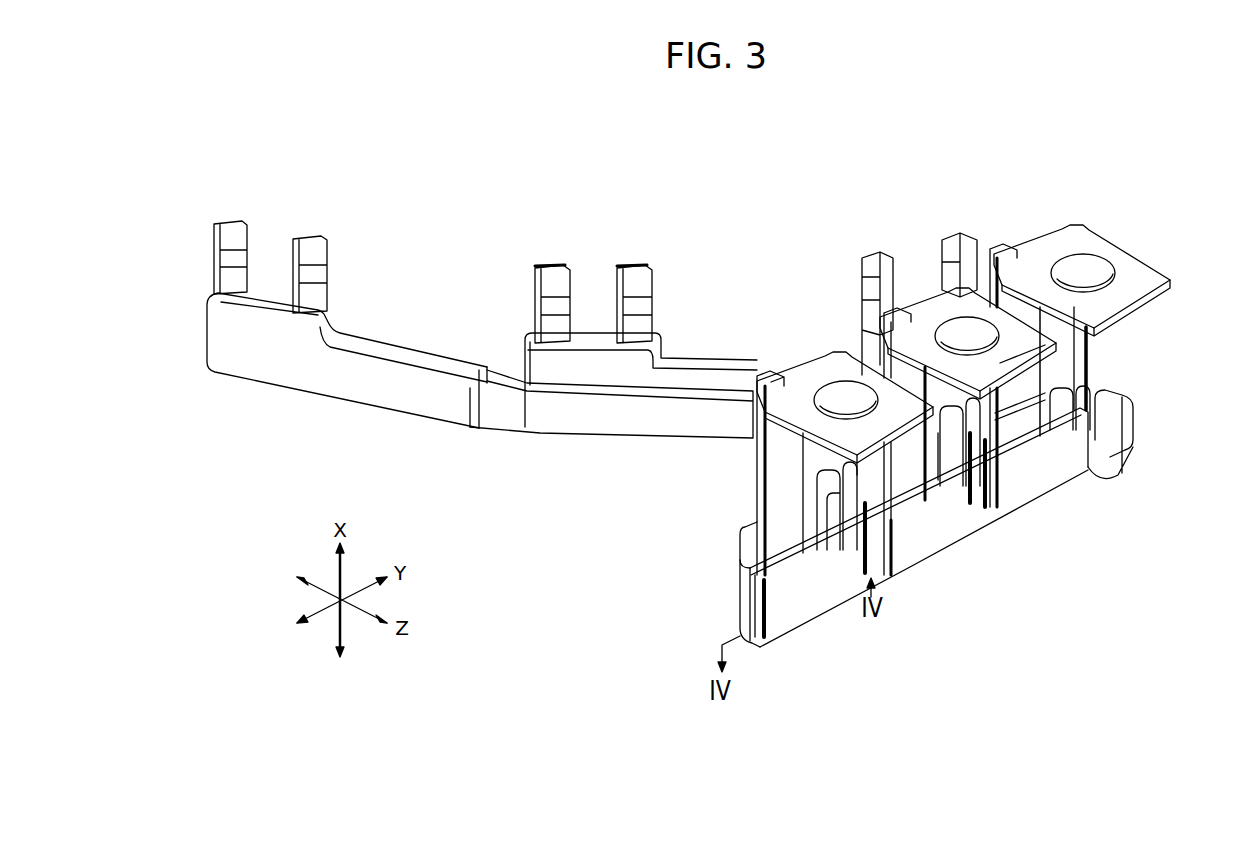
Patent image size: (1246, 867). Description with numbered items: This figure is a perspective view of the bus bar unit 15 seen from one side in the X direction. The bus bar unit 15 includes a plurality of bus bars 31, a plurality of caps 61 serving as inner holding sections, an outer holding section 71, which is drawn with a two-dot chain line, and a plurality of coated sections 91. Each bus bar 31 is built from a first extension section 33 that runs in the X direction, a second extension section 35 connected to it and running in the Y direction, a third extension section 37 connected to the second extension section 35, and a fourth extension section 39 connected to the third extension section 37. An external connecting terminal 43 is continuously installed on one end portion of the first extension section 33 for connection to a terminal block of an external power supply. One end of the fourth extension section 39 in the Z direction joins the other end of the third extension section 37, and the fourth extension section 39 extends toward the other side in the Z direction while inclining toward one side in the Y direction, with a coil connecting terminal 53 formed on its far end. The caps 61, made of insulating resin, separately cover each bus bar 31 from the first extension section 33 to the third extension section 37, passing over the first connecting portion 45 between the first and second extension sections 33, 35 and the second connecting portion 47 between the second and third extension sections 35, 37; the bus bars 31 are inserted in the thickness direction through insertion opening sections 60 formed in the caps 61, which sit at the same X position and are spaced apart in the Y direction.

The bus bar unit 15 is at (1062, 200).
The bus bar 31 is at (1155, 194).
The first extension section 33 is at (750, 432).
The second extension section 35 is at (838, 745).
The third extension section 37 is at (1153, 381).
The fourth extension section 39 is at (552, 485).
The external connecting terminal 43 is at (1208, 226).
The first connecting portion 45 is at (1060, 455).
The second connecting portion 47 is at (1192, 473).
The coil connecting terminal 53 is at (222, 220).
The insertion opening section 60 is at (668, 533).
The cap 61 is at (668, 607).
The outer holding section 71 is at (1133, 434).
The coated section 91 is at (527, 363).